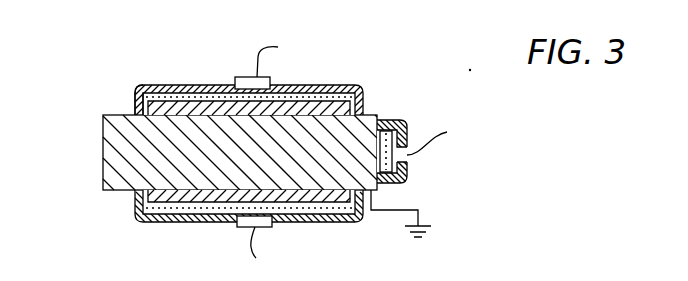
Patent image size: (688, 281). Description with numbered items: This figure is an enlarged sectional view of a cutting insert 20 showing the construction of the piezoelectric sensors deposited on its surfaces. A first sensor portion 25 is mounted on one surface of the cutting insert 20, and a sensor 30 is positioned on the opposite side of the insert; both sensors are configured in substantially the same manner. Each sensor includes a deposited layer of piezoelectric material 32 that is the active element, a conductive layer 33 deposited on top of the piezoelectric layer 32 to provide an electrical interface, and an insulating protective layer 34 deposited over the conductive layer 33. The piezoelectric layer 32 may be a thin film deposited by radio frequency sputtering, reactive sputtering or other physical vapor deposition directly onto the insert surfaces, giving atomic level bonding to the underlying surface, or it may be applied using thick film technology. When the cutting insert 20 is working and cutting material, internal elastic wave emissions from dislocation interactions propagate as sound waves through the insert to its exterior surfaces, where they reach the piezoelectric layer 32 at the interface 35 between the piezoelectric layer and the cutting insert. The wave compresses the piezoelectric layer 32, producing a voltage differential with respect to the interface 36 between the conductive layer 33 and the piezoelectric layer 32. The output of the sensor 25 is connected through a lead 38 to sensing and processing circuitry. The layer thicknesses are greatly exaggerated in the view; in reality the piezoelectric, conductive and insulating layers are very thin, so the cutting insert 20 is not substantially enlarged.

The cutting insert 20 is at (103, 117).
The first sensor portion 25 is at (355, 70).
The sensor 30 is at (312, 221).
The piezoelectric layer 32 is at (360, 107).
The conductive layer 33 is at (174, 88).
The insulating protective layer 34 is at (140, 92).
The interface 35 is at (141, 92).
The interface 36 is at (292, 86).
The lead 38 is at (256, 50).